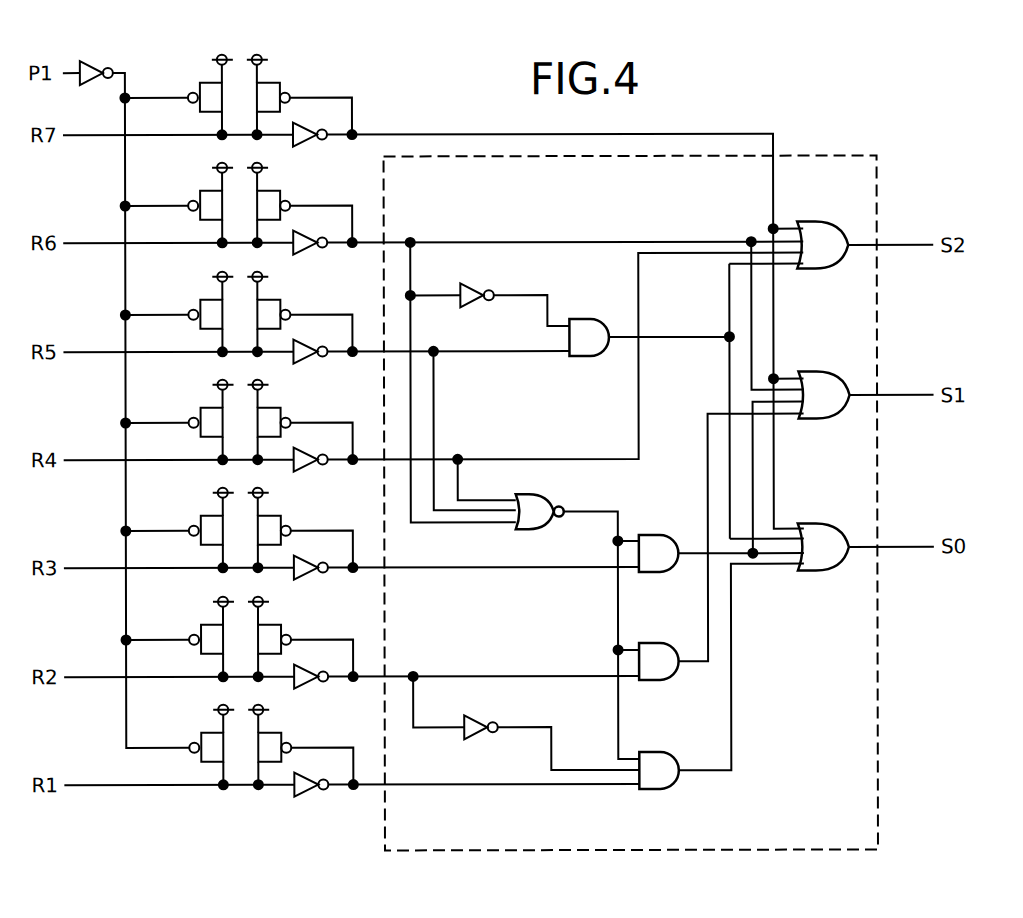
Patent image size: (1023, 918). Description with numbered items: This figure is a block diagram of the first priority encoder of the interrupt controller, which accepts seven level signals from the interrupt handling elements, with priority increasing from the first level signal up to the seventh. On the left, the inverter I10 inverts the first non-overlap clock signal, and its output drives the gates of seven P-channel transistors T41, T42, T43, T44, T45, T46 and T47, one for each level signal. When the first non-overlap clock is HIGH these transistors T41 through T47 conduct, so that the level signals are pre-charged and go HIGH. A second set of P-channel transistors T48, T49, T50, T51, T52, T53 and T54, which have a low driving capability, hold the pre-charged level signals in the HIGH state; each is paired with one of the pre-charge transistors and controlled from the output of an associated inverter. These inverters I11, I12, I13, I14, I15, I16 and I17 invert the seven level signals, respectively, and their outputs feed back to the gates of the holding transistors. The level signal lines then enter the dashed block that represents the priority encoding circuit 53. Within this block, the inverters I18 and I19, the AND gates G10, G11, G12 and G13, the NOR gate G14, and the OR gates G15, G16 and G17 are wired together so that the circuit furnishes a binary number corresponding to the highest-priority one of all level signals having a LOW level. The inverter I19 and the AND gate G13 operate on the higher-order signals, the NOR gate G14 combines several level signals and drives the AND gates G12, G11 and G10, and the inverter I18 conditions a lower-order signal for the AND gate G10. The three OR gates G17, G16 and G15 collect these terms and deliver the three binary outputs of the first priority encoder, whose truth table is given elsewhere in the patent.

The inverter I10 is at (97, 87).
The inverter I11 is at (312, 805).
The inverter I12 is at (312, 697).
The inverter I13 is at (312, 588).
The inverter I14 is at (312, 480).
The inverter I15 is at (312, 372).
The inverter I16 is at (312, 263).
The inverter I17 is at (312, 155).
The inverter I18 is at (478, 707).
The inverter I19 is at (478, 275).
The P-channel transistor T41 is at (188, 731).
The P-channel transistor T42 is at (188, 623).
The P-channel transistor T43 is at (188, 514).
The P-channel transistor T44 is at (188, 406).
The P-channel transistor T45 is at (188, 298).
The P-channel transistor T46 is at (188, 189).
The P-channel transistor T47 is at (188, 81).
The P-channel transistor T48 is at (292, 731).
The P-channel transistor T49 is at (292, 623).
The P-channel transistor T50 is at (292, 514).
The P-channel transistor T51 is at (292, 406).
The P-channel transistor T52 is at (292, 298).
The P-channel transistor T53 is at (292, 189).
The P-channel transistor T54 is at (292, 81).
The AND gate G10 is at (660, 752).
The AND gate G11 is at (660, 646).
The AND gate G12 is at (660, 537).
The AND gate G13 is at (590, 319).
The NOR gate G14 is at (553, 489).
The OR gate G15 is at (822, 524).
The OR gate G16 is at (822, 374).
The OR gate G17 is at (822, 222).
The priority encoding circuit 53 is at (880, 805).